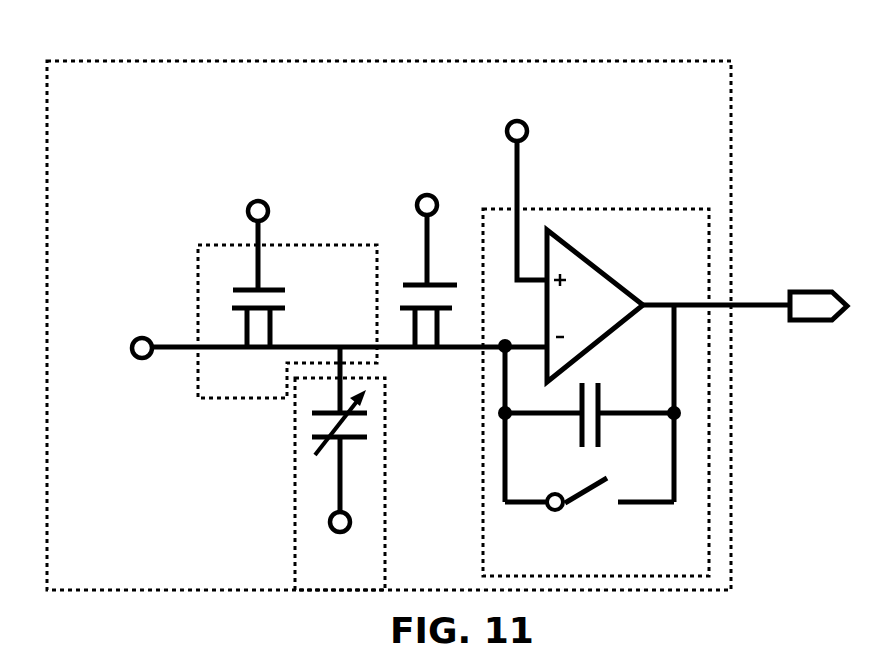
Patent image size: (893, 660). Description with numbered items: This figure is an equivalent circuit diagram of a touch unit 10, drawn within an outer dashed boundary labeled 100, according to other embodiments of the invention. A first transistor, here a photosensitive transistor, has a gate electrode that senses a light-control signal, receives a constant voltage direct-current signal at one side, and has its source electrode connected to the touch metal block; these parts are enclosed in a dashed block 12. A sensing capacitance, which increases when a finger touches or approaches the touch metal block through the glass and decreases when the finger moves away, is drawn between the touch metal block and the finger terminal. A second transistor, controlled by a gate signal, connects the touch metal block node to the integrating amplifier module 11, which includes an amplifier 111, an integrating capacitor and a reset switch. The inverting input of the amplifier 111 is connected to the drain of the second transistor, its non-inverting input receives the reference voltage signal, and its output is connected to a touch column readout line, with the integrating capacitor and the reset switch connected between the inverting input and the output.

The fingerprint sensing pixel circuit 100 is at (427, 38).
The touch unit 10 is at (207, 61).
The sensing electrode unit 12 is at (297, 245).
The integrating amplifier module 11 is at (618, 209).
The amplifier 111 is at (598, 270).